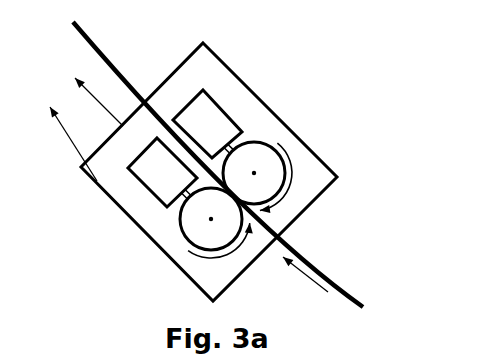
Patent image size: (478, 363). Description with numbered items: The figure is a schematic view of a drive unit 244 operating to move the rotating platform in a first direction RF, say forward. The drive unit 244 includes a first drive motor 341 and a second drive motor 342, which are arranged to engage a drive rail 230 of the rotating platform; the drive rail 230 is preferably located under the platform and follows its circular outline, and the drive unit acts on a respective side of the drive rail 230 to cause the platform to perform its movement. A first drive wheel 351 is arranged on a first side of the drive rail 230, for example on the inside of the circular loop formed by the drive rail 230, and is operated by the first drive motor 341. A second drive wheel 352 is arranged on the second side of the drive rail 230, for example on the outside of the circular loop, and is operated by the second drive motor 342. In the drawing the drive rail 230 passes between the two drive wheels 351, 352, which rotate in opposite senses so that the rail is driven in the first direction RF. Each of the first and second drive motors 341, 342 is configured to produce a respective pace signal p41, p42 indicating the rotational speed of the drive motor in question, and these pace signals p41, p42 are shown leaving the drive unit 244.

The drive unit 244 is at (225, 66).
The first drive motor 341 is at (225, 111).
The second drive motor 342 is at (147, 188).
The first drive wheel 351 is at (270, 146).
The second drive wheel 352 is at (187, 239).
The drive rail 230 is at (340, 283).
The first direction RF is at (294, 278).
The pace signal p41 is at (83, 84).
The pace signal p42 is at (57, 129).